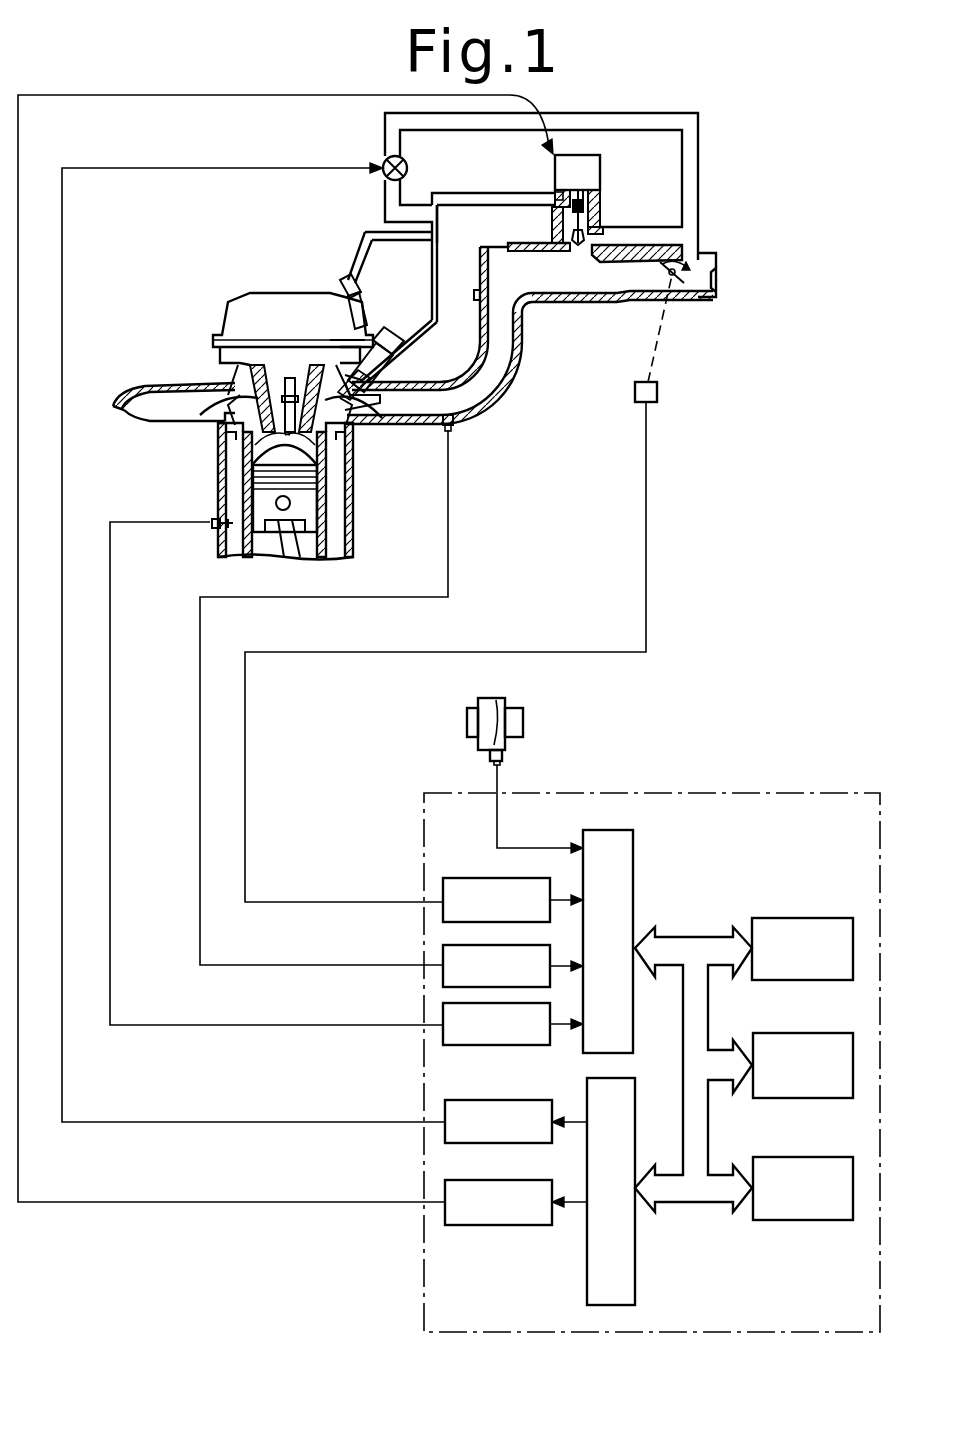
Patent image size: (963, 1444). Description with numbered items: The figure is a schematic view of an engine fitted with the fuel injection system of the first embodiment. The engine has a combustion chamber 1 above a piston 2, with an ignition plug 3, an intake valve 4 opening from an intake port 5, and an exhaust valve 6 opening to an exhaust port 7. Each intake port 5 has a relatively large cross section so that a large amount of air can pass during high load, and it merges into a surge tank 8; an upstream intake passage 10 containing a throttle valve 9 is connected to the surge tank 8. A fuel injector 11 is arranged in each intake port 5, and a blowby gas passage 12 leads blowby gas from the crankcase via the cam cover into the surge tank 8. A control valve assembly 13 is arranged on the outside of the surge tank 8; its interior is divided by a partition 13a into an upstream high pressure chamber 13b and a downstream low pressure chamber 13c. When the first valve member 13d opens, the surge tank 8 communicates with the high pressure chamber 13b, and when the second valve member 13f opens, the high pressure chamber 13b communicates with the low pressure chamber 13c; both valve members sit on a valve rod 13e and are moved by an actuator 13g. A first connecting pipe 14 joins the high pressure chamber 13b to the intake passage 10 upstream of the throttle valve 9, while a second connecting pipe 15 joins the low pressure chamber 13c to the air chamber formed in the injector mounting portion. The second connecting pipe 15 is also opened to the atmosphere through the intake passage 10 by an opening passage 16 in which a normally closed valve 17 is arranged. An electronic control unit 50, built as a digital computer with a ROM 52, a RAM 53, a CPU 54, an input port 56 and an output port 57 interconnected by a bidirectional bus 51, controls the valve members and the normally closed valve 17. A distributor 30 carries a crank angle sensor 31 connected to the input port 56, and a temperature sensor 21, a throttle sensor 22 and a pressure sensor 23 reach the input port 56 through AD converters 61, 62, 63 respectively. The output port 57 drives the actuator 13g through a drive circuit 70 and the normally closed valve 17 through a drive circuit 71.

The combustion chamber 1 is at (307, 454).
The piston 2 is at (313, 507).
The ignition plug 3 is at (258, 440).
The intake valve 4 is at (365, 420).
The intake port 5 is at (476, 398).
The exhaust valve 6 is at (235, 408).
The exhaust port 7 is at (175, 392).
The surge tank 8 is at (543, 283).
The throttle valve 9 is at (670, 293).
The upstream intake passage 10 is at (716, 283).
The fuel injector 11 is at (373, 360).
The blowby gas passage 12 is at (368, 250).
The control valve assembly 13 is at (616, 204).
The partition 13a is at (605, 195).
The high pressure chamber 13b is at (552, 223).
The low pressure chamber 13c is at (560, 195).
The first valve member 13d is at (583, 247).
The valve rod 13e is at (598, 230).
The second valve member 13f is at (595, 190).
The actuator 13g is at (571, 158).
The first connecting pipe 14 is at (645, 265).
The second connecting pipe 15 is at (452, 200).
The opening passage 16 is at (385, 200).
The normally closed valve 17 is at (384, 158).
The temperature sensor 21 is at (212, 528).
The throttle sensor 22 is at (657, 392).
The pressure sensor 23 is at (452, 432).
The distributor 30 is at (495, 703).
The crank angle sensor 31 is at (504, 758).
The electronic control unit 50 is at (838, 790).
The bidirectional bus 51 is at (693, 938).
The ROM 52 is at (832, 918).
The RAM 53 is at (832, 1033).
The CPU 54 is at (835, 1157).
The input port 56 is at (634, 840).
The output port 57 is at (637, 1290).
The AD converter 61 is at (445, 1033).
The AD converter 62 is at (443, 972).
The AD converter 63 is at (443, 908).
The drive circuit 70 is at (445, 1212).
The drive circuit 71 is at (445, 1130).